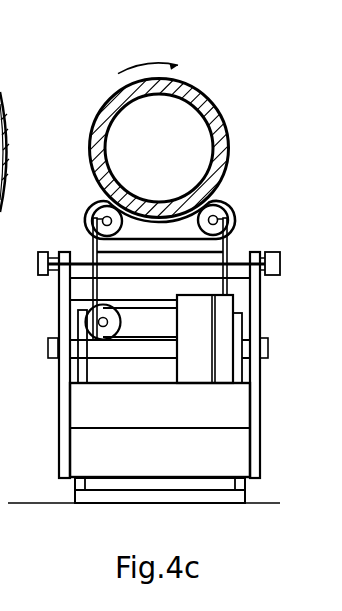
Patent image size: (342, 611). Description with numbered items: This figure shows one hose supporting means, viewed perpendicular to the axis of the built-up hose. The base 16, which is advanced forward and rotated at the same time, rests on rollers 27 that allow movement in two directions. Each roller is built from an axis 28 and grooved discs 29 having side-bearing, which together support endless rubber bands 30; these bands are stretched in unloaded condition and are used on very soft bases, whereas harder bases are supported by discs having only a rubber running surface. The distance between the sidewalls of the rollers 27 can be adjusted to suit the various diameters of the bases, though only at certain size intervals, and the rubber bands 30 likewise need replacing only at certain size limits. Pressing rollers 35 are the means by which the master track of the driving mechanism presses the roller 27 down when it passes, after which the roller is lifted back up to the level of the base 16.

The base 16 is at (207, 102).
The rollers 27 is at (228, 280).
The axis 28 is at (72, 274).
The grooved discs 29 is at (92, 217).
The endless rubber bands 30 is at (228, 200).
The pressing rollers 35 is at (273, 253).